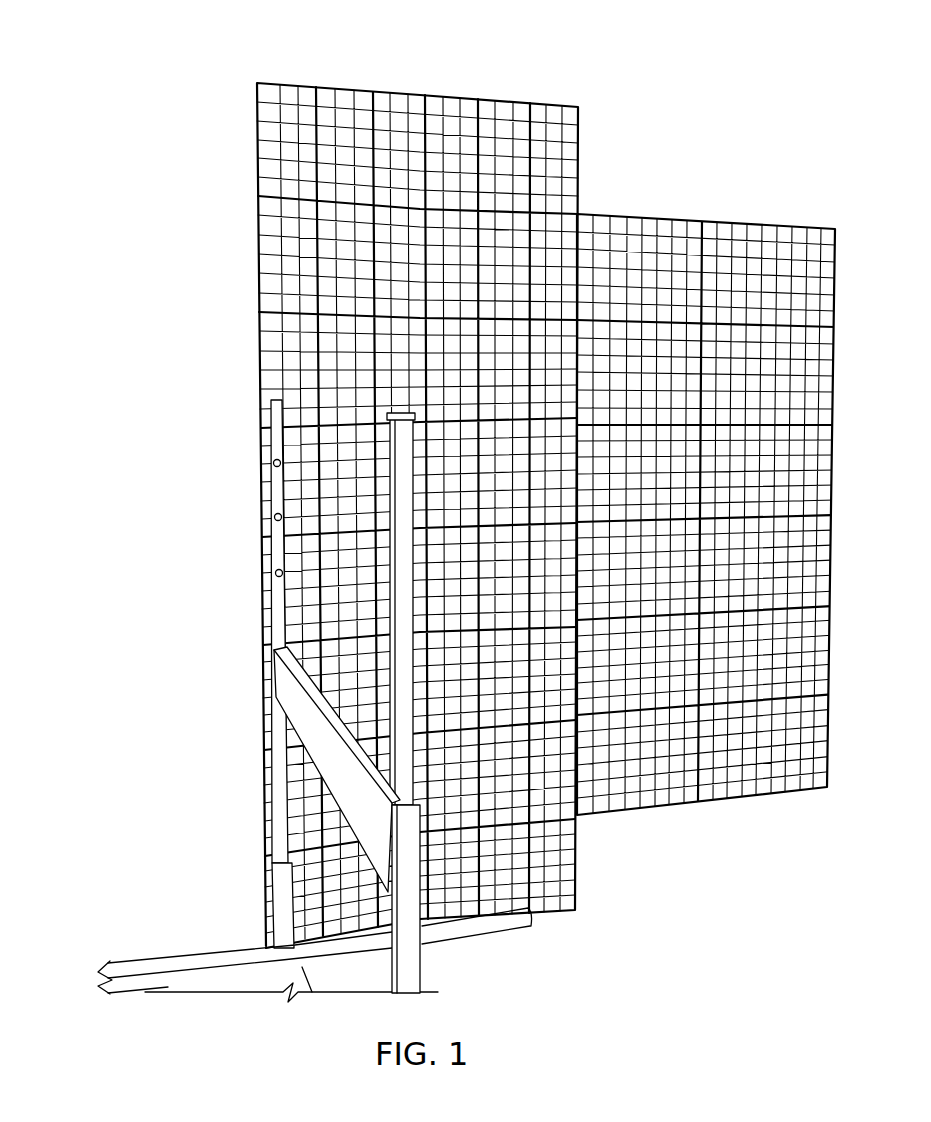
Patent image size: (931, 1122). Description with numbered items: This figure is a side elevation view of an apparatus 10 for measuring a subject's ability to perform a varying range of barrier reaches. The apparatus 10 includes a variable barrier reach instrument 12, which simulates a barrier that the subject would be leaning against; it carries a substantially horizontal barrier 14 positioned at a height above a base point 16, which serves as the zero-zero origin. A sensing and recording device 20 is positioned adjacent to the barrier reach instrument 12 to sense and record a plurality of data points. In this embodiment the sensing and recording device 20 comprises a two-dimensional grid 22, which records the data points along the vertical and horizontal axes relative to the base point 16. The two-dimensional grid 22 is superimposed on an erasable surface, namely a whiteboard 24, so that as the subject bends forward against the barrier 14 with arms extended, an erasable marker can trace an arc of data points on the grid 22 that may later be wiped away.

The apparatus 10 is at (435, 507).
The variable barrier reach instrument 12 is at (315, 701).
The horizontal barrier 14 is at (300, 720).
The base point 16 is at (285, 957).
The sensing and recording device 20 is at (457, 480).
The two-dimensional grid 22 is at (366, 175).
The whiteboard 24 is at (258, 96).